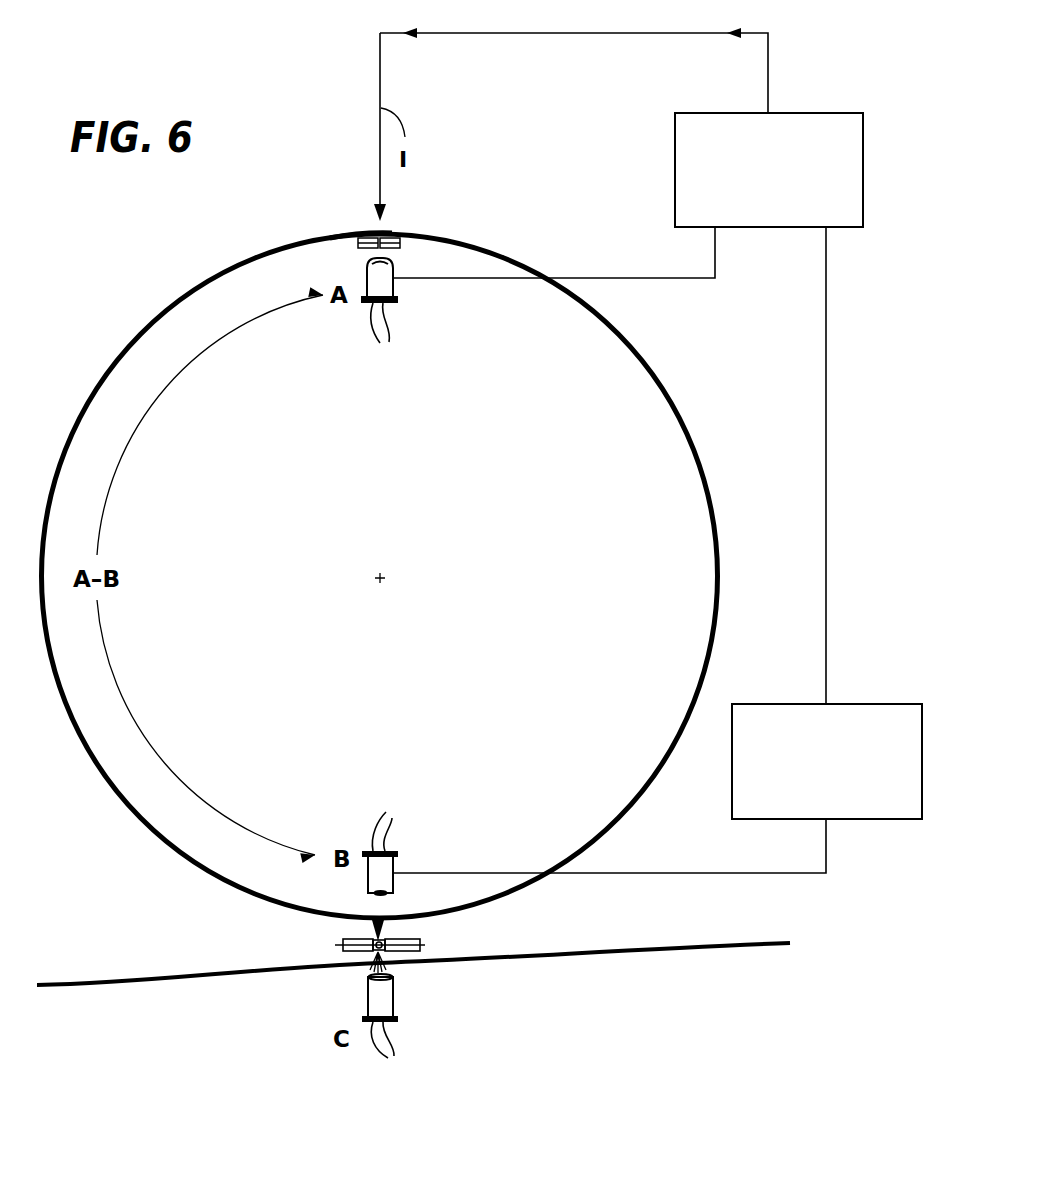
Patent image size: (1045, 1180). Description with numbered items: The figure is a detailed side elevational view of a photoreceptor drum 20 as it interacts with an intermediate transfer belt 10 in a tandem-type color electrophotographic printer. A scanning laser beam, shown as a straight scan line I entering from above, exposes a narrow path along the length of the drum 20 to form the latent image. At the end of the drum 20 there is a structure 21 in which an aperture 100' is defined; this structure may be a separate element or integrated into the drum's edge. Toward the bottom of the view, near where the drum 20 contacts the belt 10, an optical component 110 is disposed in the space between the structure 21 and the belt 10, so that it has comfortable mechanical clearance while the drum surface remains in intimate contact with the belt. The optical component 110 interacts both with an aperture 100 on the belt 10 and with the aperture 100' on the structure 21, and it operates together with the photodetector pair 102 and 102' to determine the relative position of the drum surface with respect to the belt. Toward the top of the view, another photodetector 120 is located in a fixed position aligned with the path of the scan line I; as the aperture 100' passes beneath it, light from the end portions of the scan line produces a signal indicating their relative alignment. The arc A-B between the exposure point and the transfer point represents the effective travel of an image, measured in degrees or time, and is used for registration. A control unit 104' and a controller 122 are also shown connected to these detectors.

The intermediate transfer belt 10 is at (622, 946).
The photoreceptor drum 20 is at (673, 405).
The structure 21 is at (360, 246).
The aperture 100 is at (336, 977).
The aperture 100' is at (427, 556).
The photodetector 102 is at (402, 853).
The photodetector 102' is at (407, 1016).
The control unit 104' is at (817, 741).
The optical component 110 is at (343, 943).
The photodetector 120 is at (395, 286).
The controller 122 is at (725, 112).